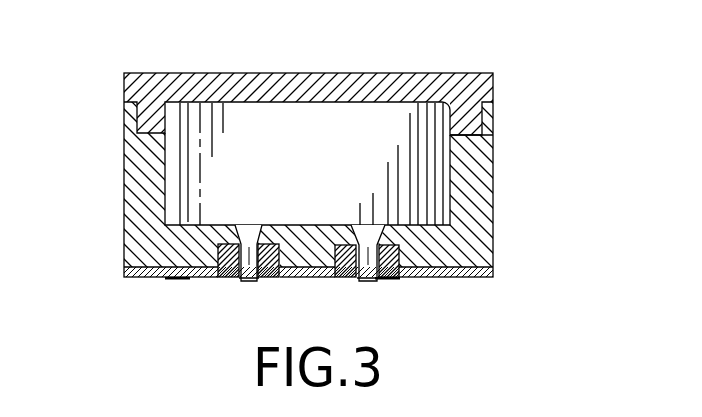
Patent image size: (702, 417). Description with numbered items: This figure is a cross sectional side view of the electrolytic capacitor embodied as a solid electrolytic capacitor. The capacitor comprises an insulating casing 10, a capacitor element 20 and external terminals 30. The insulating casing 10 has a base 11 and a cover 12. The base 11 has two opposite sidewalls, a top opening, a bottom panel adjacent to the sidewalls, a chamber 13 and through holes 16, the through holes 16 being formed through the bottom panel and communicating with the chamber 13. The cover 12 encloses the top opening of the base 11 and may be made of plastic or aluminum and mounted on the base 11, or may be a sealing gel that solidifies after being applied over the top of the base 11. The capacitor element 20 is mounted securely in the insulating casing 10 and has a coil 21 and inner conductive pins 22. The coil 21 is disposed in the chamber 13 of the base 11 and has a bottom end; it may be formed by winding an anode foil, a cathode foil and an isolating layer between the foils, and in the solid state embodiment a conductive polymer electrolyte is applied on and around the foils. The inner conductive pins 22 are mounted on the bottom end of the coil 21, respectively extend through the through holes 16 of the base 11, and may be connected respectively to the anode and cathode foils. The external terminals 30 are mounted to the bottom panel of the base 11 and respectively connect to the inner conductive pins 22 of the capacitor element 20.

The insulating casing 10 is at (486, 73).
The base 11 is at (489, 197).
The cover 12 is at (382, 73).
The chamber 13 is at (450, 163).
The through holes 16 is at (245, 282).
The capacitor element 20 is at (268, 112).
The coil 21 is at (204, 189).
The inner conductive pins 22 is at (252, 284).
The external terminals 30 is at (193, 283).